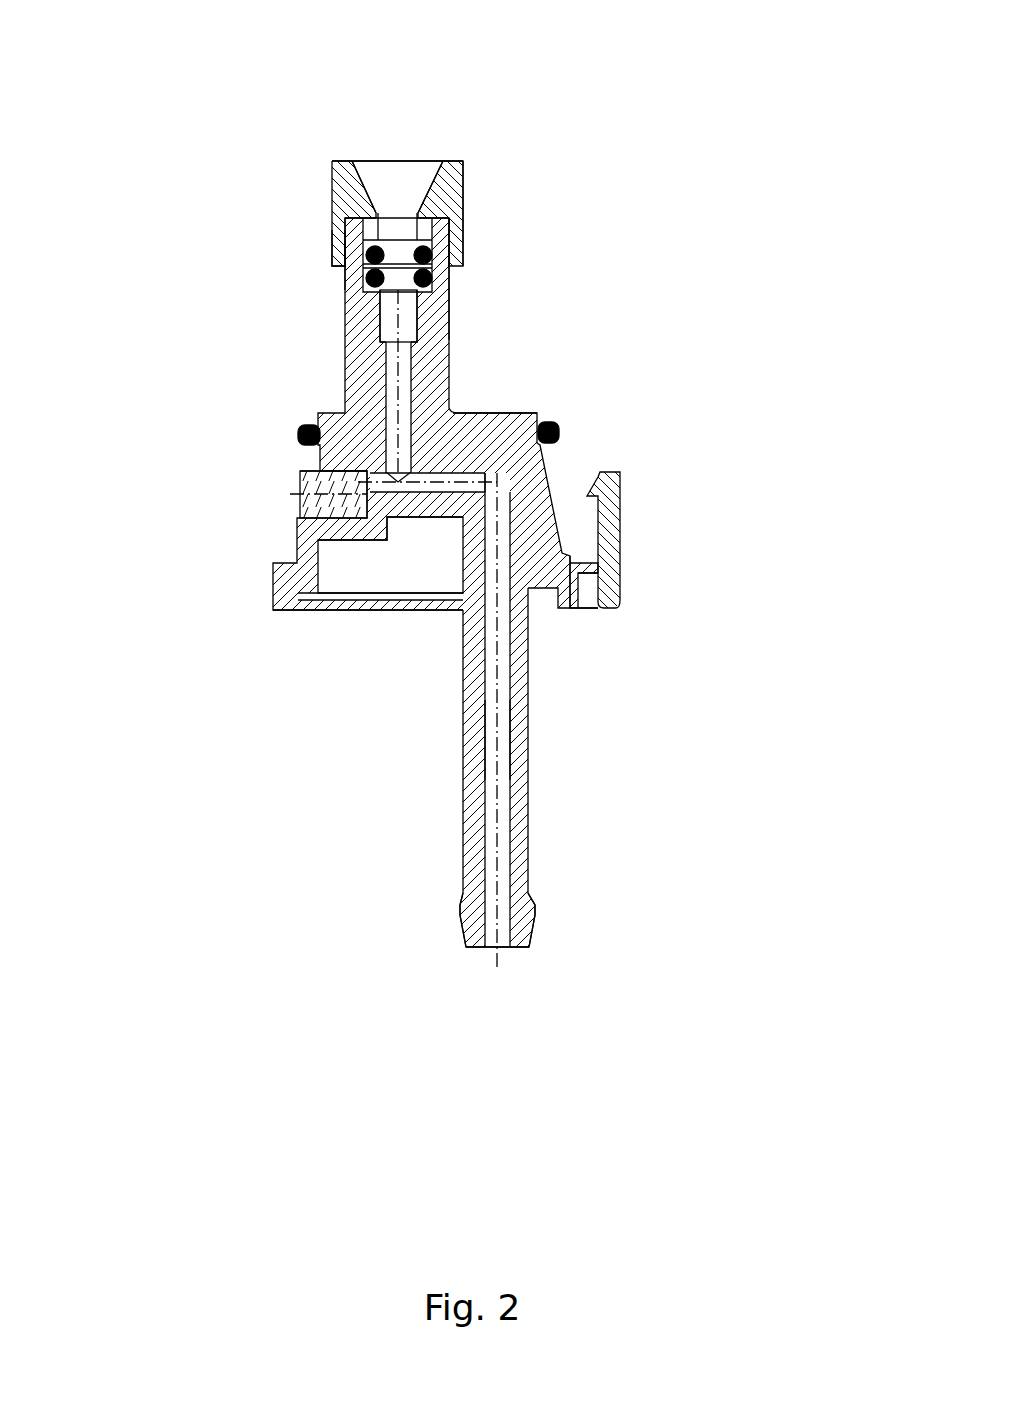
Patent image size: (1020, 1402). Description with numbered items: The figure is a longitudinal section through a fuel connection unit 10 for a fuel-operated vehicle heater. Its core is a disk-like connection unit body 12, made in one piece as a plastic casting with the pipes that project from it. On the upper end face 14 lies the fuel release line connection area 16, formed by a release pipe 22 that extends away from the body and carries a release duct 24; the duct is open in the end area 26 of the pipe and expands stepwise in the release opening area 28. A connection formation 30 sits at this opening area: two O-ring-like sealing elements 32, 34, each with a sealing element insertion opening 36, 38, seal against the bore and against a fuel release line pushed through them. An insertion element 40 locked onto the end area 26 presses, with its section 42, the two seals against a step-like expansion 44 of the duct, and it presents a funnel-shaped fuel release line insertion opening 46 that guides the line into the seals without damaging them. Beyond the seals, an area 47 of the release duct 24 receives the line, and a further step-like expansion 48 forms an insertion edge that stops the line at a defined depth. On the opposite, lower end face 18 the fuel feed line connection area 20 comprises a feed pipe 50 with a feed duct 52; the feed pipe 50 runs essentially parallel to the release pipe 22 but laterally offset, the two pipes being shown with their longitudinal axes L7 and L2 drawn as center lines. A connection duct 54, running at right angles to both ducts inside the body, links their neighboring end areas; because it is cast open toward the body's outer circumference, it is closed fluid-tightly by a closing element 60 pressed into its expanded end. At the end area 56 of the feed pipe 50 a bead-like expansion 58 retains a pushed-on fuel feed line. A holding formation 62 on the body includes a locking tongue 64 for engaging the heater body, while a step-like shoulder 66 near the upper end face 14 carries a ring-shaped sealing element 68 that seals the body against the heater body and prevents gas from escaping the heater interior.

The fuel connection unit 10 is at (733, 185).
The connection unit body 12 is at (548, 470).
The end face 14 is at (525, 382).
The fuel release line connection area 16 is at (195, 277).
The end face 18 is at (300, 675).
The fuel feed line connection area 20 is at (667, 800).
The release pipe 22 is at (448, 312).
The release duct 24 is at (407, 402).
The end area 26 is at (347, 267).
The release opening area 28 is at (493, 200).
The connection formation 30 is at (270, 125).
The sealing element 32 is at (437, 278).
The sealing element 34 is at (428, 222).
The sealing element insertion opening 36 is at (375, 326).
The sealing element insertion opening 38 is at (394, 248).
The insertion element 40 is at (331, 182).
The section 42 is at (332, 236).
The step-like expansion 44 is at (370, 298).
The funnel-shaped fuel release line insertion opening 46 is at (358, 162).
The area 47 is at (413, 318).
The step-like expansion 48 is at (420, 343).
The feed pipe 50 is at (465, 767).
The feed duct 52 is at (505, 697).
The connection duct 54 is at (433, 487).
The end area 56 is at (532, 867).
The bead-like expansion 58 is at (463, 903).
The closing element 60 is at (330, 503).
The holding formation 62 is at (650, 527).
The locking tongue 64 is at (622, 493).
The step-like shoulder 66 is at (303, 452).
The ring-shaped sealing element 68 is at (553, 425).
The tube length L2 is at (500, 773).
The block length L7 is at (302, 483).